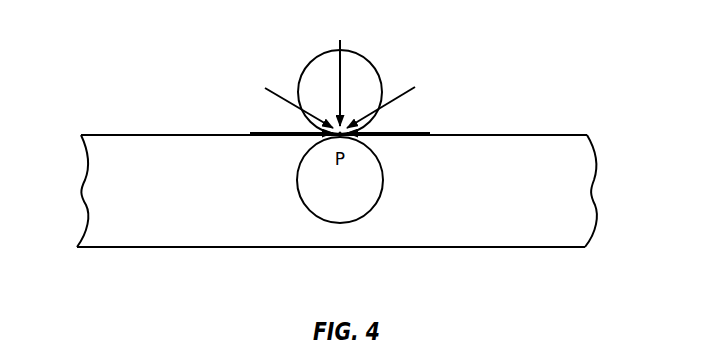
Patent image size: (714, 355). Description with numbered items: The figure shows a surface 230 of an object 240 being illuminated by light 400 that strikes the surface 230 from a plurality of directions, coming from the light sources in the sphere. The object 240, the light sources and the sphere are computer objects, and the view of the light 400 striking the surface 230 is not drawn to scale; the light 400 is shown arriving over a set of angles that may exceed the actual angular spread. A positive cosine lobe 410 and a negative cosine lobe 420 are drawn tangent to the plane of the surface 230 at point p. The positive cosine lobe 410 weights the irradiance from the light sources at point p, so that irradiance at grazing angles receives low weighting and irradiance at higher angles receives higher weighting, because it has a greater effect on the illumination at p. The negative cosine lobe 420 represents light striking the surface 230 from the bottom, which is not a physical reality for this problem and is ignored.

The surface 230 is at (567, 135).
The object 240 is at (598, 173).
The light 400 is at (396, 93).
The positive cosine lobe 410 is at (308, 63).
The negative cosine lobe 420 is at (370, 210).